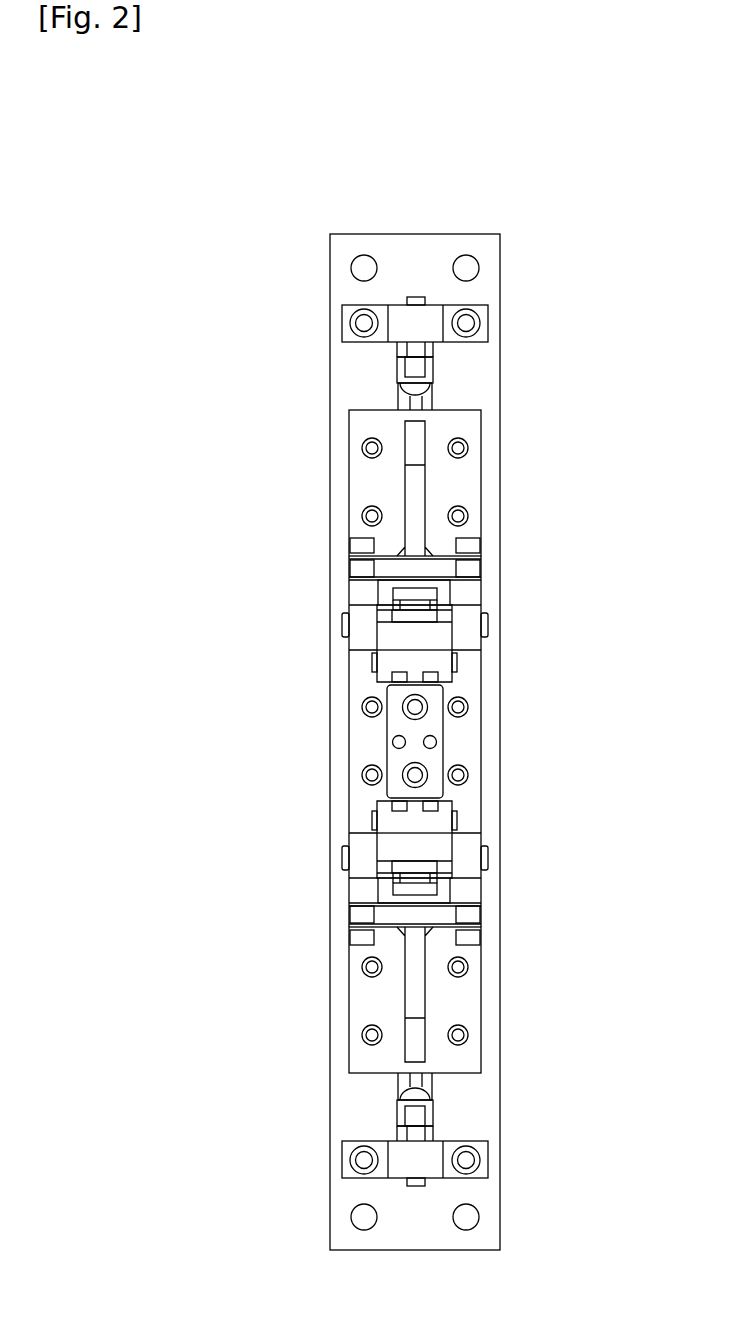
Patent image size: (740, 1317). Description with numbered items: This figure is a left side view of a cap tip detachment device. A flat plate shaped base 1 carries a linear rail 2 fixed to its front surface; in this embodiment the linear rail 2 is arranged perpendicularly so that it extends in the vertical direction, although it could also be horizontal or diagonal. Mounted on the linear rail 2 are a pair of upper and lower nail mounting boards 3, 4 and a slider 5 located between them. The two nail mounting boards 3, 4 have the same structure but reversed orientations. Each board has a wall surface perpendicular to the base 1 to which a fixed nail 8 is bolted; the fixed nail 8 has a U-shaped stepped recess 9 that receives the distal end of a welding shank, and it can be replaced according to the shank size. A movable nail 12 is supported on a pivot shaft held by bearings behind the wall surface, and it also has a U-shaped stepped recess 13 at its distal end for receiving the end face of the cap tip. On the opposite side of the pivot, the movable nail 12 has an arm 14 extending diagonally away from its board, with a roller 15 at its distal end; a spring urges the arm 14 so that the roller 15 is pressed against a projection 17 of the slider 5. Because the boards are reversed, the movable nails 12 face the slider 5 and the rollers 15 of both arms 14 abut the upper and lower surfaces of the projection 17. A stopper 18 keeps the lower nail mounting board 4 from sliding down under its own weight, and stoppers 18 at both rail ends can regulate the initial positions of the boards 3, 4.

The base 1 is at (486, 388).
The linear rail 2 is at (433, 364).
The nail mounting board 3 is at (468, 479).
The nail mounting board 4 is at (468, 1004).
The slider 5 is at (468, 748).
The fixed nail 8 is at (447, 595).
The U-shaped stepped recess 9 is at (413, 598).
The movable nail 12 is at (447, 615).
The U-shaped stepped recess 13 is at (413, 612).
The arm 14 is at (433, 653).
The roller 15 is at (433, 678).
The projection 17 is at (395, 728).
The stopper 18 is at (402, 391).